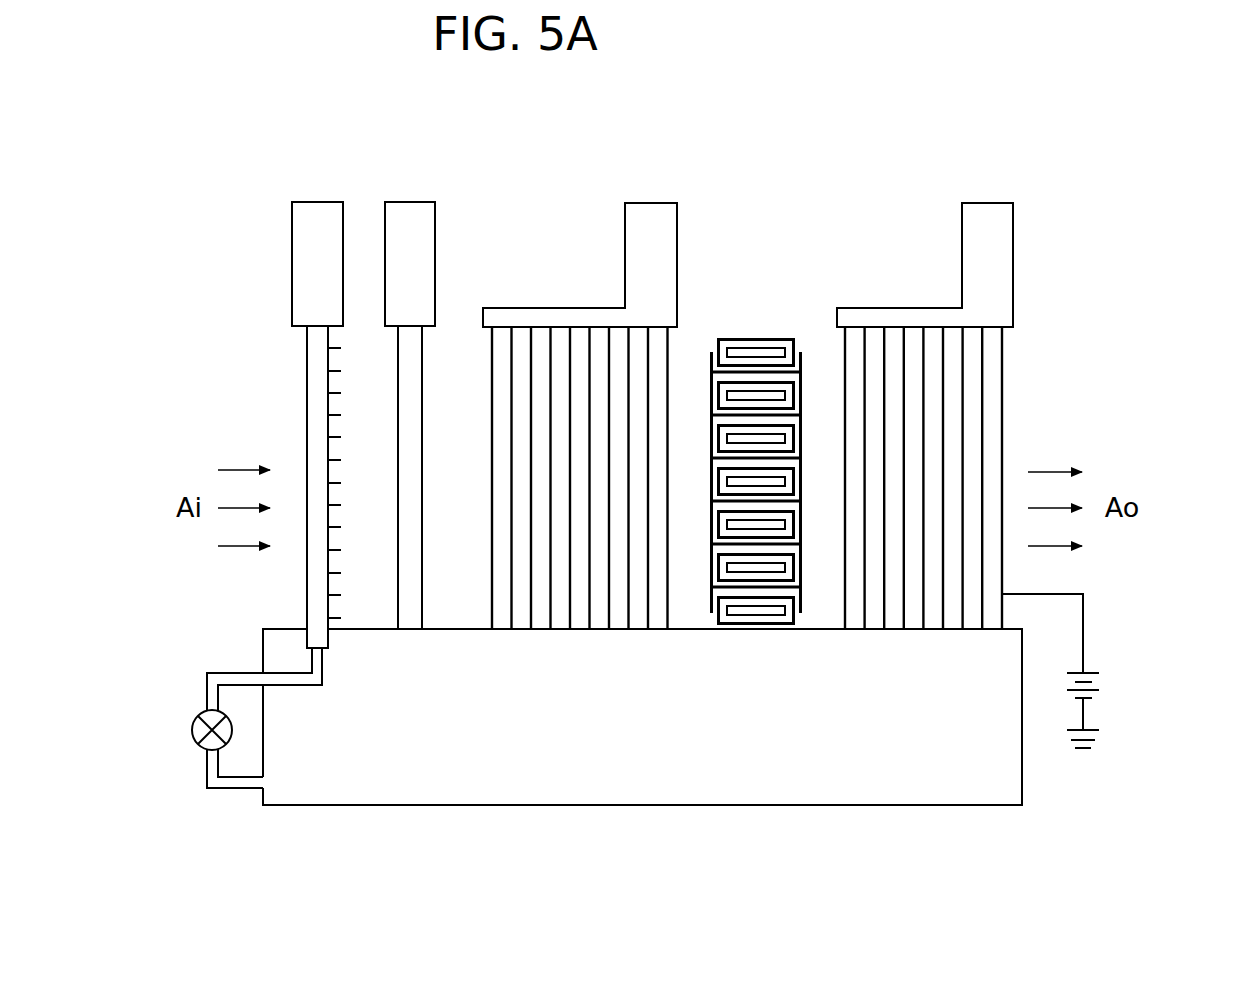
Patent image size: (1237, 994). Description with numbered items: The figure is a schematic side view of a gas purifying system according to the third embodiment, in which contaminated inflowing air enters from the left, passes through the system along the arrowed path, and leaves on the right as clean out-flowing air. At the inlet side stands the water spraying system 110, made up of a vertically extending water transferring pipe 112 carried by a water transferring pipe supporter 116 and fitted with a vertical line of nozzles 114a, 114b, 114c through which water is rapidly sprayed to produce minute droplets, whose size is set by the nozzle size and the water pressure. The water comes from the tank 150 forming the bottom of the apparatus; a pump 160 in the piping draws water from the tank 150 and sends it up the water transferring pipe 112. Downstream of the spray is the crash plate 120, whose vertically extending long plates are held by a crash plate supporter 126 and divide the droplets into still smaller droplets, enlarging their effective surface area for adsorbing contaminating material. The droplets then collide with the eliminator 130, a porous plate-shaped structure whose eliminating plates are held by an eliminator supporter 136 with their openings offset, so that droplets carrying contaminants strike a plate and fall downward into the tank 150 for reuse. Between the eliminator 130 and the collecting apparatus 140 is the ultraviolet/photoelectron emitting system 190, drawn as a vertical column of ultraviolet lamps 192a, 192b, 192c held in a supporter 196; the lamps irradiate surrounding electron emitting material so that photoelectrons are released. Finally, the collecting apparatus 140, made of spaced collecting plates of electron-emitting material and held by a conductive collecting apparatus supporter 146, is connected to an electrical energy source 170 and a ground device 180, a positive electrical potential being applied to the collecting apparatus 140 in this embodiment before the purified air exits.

The water spraying system 110 is at (331, 368).
The water transferring pipe 112 is at (307, 430).
The nozzle 114a is at (340, 348).
The nozzle 114b is at (340, 371).
The nozzle 114c is at (340, 393).
The water transferring pipe supporter 116 is at (300, 262).
The crash plate 120 is at (469, 358).
The crash plate supporter 126 is at (435, 265).
The eliminator 130 is at (639, 358).
The eliminator supporter 136 is at (672, 226).
The collecting apparatus 140 is at (983, 358).
The collecting apparatus supporter 146 is at (1013, 264).
The tank 150 is at (503, 806).
The pump 160 is at (197, 716).
The electrical energy source 170 is at (1097, 683).
The ground device 180 is at (1097, 740).
The ultraviolet/photoelectron emitting system 190 is at (813, 473).
The ultraviolet lamp 192a is at (758, 339).
The ultraviolet lamp 192b is at (790, 394).
The ultraviolet lamp 192c is at (790, 437).
The supporter 196 is at (800, 601).